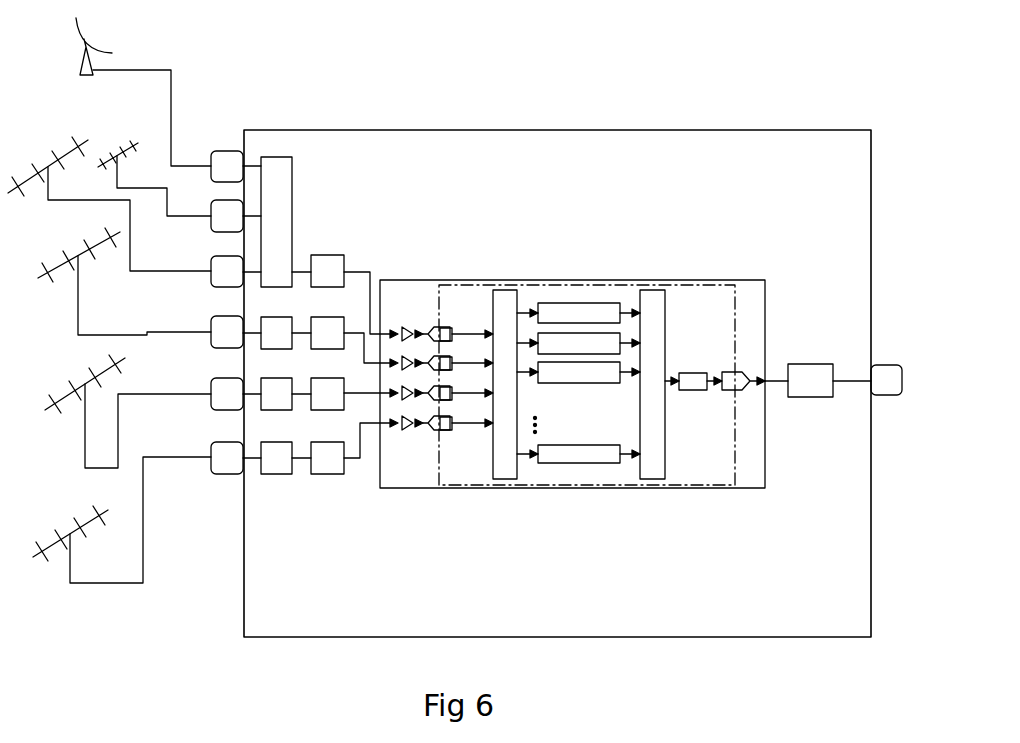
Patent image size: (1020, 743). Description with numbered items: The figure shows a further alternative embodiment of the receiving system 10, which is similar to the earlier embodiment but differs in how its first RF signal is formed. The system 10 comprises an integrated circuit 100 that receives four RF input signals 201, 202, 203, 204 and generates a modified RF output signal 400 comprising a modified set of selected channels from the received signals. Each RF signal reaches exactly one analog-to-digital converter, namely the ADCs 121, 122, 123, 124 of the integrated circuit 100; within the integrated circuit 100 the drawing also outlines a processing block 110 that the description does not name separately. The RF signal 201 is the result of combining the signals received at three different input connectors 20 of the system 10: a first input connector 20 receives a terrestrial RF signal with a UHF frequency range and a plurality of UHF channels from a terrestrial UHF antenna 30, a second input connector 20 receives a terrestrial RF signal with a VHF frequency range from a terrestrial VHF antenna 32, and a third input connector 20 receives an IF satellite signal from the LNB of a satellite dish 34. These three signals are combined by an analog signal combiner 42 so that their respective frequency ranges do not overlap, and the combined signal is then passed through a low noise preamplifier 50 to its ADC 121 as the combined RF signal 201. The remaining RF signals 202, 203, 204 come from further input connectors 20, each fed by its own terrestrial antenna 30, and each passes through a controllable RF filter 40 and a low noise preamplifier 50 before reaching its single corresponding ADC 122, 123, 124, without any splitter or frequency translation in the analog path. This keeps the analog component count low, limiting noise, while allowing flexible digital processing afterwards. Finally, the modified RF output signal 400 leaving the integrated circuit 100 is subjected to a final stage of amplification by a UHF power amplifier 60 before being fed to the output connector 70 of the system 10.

The system 10 is at (356, 102).
The input connector 20 is at (232, 157).
The terrestrial UHF antenna 30 is at (55, 138).
The terrestrial VHF antenna 32 is at (116, 138).
The satellite dish 34 is at (100, 44).
The controllable RF filter 40 is at (268, 325).
The analog signal combiner 42 is at (283, 208).
The low noise preamplifier 50 is at (318, 265).
The UHF power amplifier 60 is at (792, 392).
The output connector 70 is at (884, 378).
The integrated circuit 100 is at (748, 292).
The filter bank 110 is at (622, 297).
The ADC 121 is at (441, 336).
The ADC 122 is at (446, 366).
The ADC 123 is at (448, 399).
The ADC 124 is at (446, 428).
The RF input signal 201 is at (368, 276).
The RF input signal 202 is at (381, 337).
The RF input signal 203 is at (378, 396).
The RF input signal 204 is at (359, 458).
The modified RF output signal 400 is at (775, 377).